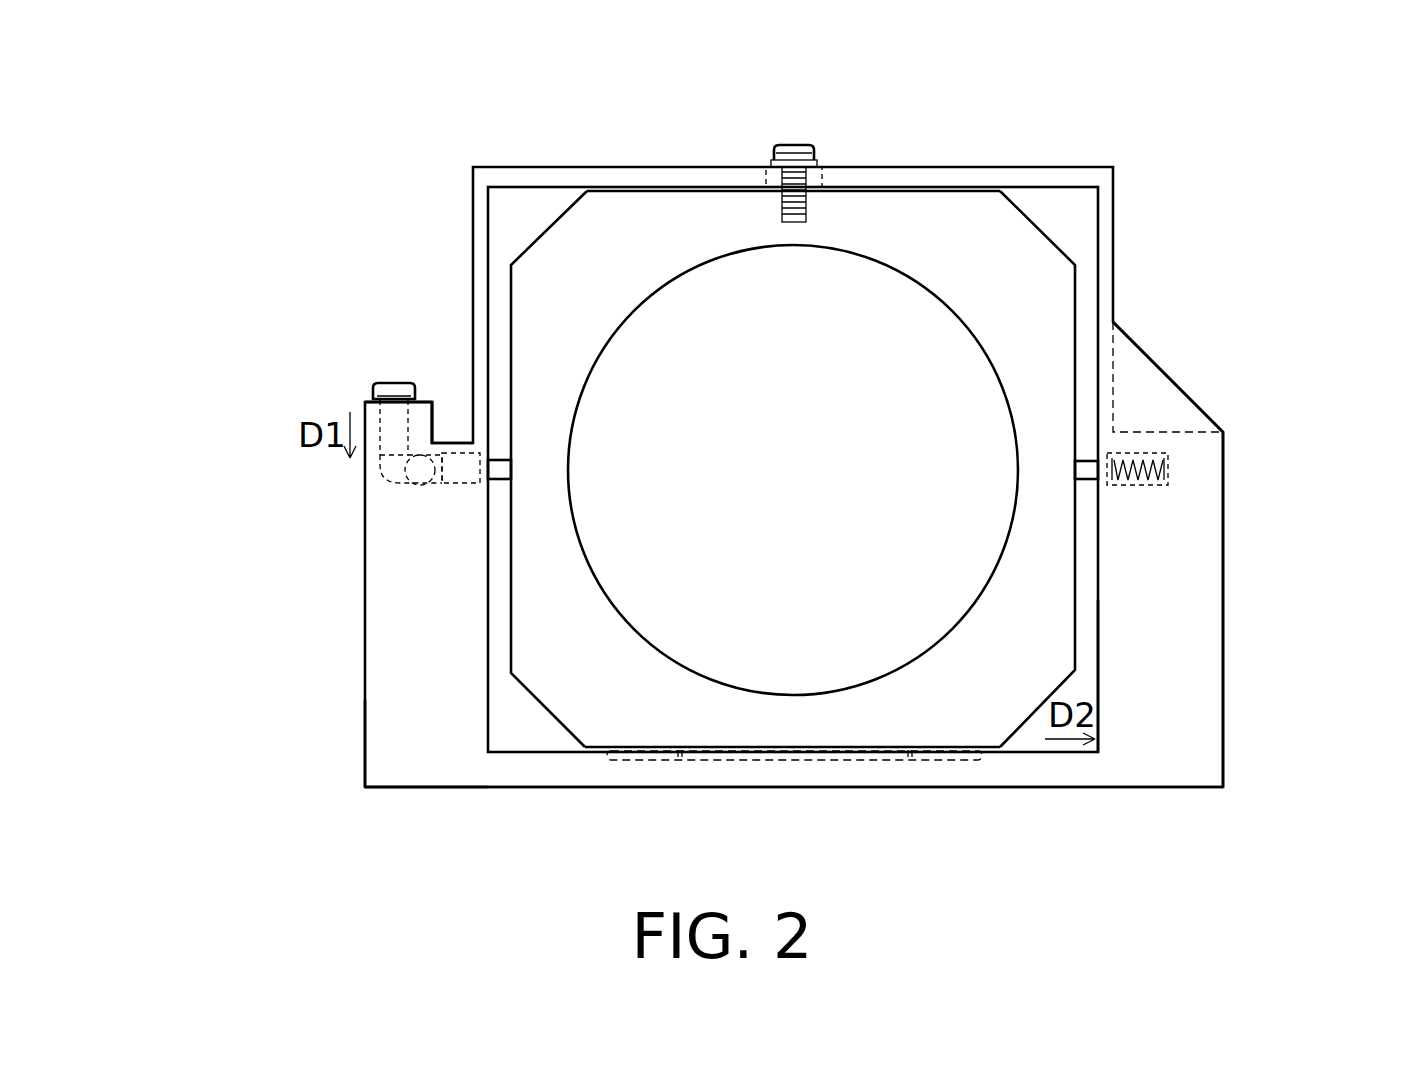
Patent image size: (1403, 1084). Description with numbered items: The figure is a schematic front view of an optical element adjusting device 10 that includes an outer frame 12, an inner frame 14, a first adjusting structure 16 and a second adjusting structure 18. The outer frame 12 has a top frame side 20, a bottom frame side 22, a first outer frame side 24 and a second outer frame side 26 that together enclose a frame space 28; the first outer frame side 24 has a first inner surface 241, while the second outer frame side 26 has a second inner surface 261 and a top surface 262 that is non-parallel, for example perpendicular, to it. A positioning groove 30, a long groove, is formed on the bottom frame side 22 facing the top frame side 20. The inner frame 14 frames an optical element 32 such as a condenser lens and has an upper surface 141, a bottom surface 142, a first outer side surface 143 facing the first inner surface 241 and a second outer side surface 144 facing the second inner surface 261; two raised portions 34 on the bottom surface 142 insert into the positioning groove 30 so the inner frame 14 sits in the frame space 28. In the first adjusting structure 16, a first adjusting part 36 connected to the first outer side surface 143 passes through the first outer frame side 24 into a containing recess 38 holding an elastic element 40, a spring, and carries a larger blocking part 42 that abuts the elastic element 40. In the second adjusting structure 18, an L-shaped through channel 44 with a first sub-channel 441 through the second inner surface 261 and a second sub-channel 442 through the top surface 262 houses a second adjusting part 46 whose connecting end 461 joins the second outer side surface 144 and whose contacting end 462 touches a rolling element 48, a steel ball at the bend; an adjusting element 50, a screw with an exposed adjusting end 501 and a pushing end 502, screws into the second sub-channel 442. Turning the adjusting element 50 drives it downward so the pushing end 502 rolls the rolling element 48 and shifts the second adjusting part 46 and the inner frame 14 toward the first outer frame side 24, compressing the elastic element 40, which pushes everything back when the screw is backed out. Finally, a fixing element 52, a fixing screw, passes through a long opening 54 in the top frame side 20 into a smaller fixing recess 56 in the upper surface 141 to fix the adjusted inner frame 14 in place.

The optical element adjusting device 10 is at (290, 109).
The outer frame 12 is at (787, 539).
The inner frame 14 is at (802, 472).
The upper surface 141 is at (928, 190).
The bottom surface 142 is at (800, 752).
The first outer side surface 143 is at (1075, 287).
The second outer side surface 144 is at (511, 291).
The first adjusting structure 16 is at (1227, 551).
The second adjusting structure 18 is at (317, 471).
The top frame side 20 is at (637, 182).
The bottom frame side 22 is at (920, 770).
The first outer frame side 24 is at (1190, 730).
The first inner surface 241 is at (1088, 645).
The second outer frame side 26 is at (380, 718).
The second inner surface 261 is at (490, 738).
The top surface 262 is at (365, 402).
The frame space 28 is at (530, 732).
The positioning groove 30 is at (745, 760).
The optical element 32 is at (925, 336).
The raised portions 34 is at (680, 758).
The first adjusting part 36 is at (1088, 480).
The containing recess 38 is at (1209, 529).
The elastic element 40 is at (1155, 487).
The blocking part 42 is at (1118, 487).
The through channel 44 is at (318, 537).
The first sub-channel 441 is at (445, 483).
The second sub-channel 442 is at (380, 462).
The second adjusting part 46 is at (351, 517).
The connecting end 461 is at (497, 472).
The contacting end 462 is at (437, 445).
The rolling element 48 is at (445, 483).
The adjusting element 50 is at (314, 390).
The adjusting end 501 is at (398, 383).
The pushing end 502 is at (395, 490).
The fixing element 52 is at (784, 132).
The opening 54 is at (835, 165).
The fixing recess 56 is at (778, 210).